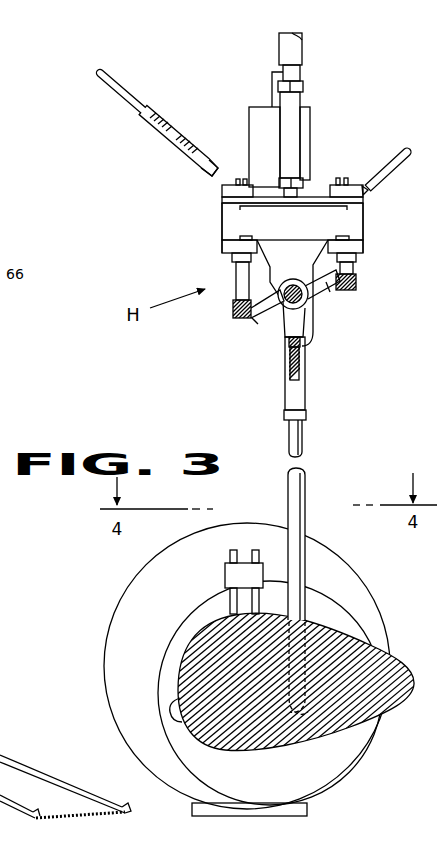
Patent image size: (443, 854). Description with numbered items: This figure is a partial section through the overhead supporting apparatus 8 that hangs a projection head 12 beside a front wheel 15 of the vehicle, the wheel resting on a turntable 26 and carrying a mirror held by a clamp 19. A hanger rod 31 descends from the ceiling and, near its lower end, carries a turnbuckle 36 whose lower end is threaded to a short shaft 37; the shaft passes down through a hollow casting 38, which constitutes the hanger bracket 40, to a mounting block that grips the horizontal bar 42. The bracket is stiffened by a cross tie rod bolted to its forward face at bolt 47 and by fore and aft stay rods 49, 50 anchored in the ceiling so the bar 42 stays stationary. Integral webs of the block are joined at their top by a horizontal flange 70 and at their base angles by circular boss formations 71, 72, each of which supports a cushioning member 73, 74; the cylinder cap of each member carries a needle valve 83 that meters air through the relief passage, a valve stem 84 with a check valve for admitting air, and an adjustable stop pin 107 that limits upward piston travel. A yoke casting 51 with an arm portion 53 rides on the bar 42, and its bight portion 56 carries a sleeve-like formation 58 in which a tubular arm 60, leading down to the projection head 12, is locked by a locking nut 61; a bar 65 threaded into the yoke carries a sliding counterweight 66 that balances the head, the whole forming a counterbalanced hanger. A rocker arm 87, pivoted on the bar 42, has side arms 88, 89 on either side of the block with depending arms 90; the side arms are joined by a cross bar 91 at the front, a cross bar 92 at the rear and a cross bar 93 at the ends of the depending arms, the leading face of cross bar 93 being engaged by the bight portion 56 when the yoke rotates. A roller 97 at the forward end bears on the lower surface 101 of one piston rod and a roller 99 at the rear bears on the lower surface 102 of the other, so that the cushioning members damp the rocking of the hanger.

The apparatus 8 is at (314, 83).
The projection head 12 is at (381, 718).
The front wheel 15 is at (135, 598).
The clamp 19 is at (225, 575).
The turntable 26 is at (308, 810).
The hanger rod 31 is at (288, 53).
The turnbuckle 36 is at (295, 122).
The short shaft 37 is at (312, 192).
The hollow casting 38 is at (240, 210).
The hanger bracket 40 is at (279, 240).
The bar 42 is at (298, 284).
The bolt 47 is at (262, 286).
The fore stay rod 49 is at (122, 93).
The aft stay rod 50 is at (375, 186).
The yoke casting 51 is at (285, 367).
The arm portion 53 is at (284, 326).
The bight portion 56 is at (288, 341).
The sleeve-like formation 58 is at (300, 400).
The tubular arm 60 is at (303, 494).
The locking nut 61 is at (305, 420).
The bar 65 is at (277, 88).
The counterweight 66 is at (258, 118).
The horizontal flange 70 is at (287, 203).
The circular boss formation 71 is at (232, 228).
The circular boss formation 72 is at (363, 218).
The cushioning member 73 is at (222, 251).
The cushioning member 74 is at (356, 249).
The needle valve 83 is at (222, 189).
The valve stem 84 is at (238, 178).
The rocker arm 87 is at (326, 299).
The side arm 88 is at (330, 293).
The side arm 89 is at (267, 299).
The depending arm 90 is at (308, 323).
The cross bar 91 is at (257, 323).
The cross bar 92 is at (322, 279).
The cross bar 93 is at (306, 348).
The roller 97 is at (240, 318).
The roller 99 is at (347, 287).
The lower surface 101 is at (238, 312).
The lower surface 102 is at (356, 275).
The adjustable stop pin 107 is at (204, 170).